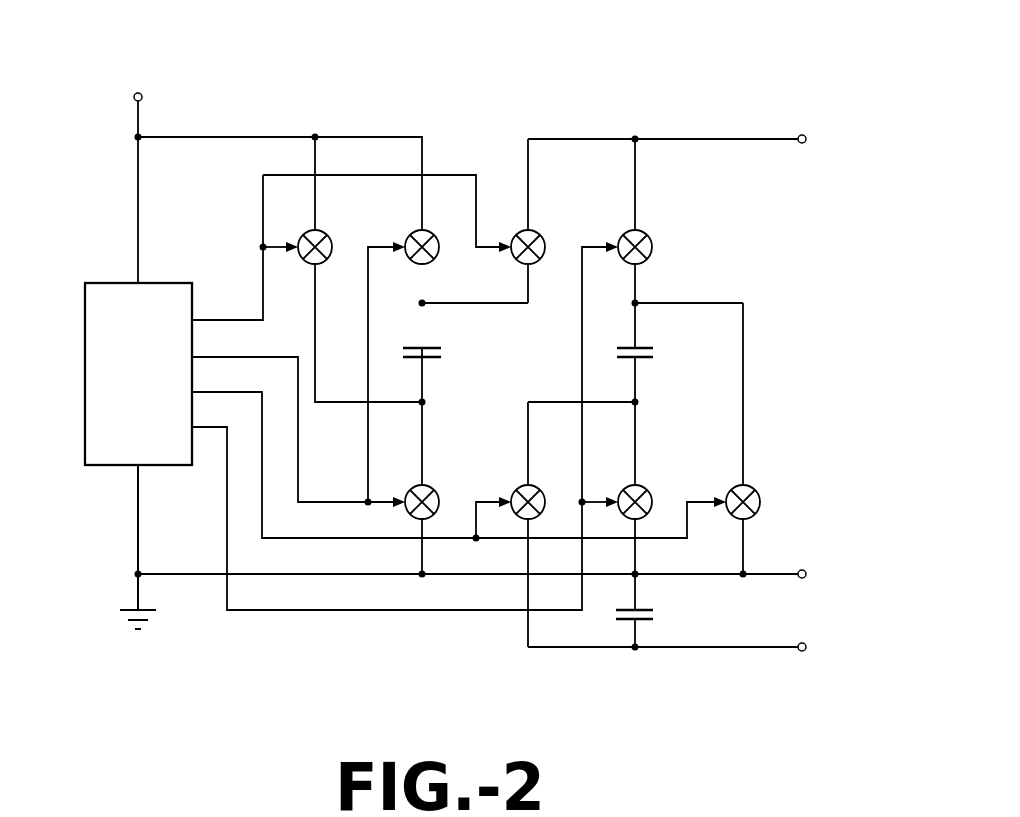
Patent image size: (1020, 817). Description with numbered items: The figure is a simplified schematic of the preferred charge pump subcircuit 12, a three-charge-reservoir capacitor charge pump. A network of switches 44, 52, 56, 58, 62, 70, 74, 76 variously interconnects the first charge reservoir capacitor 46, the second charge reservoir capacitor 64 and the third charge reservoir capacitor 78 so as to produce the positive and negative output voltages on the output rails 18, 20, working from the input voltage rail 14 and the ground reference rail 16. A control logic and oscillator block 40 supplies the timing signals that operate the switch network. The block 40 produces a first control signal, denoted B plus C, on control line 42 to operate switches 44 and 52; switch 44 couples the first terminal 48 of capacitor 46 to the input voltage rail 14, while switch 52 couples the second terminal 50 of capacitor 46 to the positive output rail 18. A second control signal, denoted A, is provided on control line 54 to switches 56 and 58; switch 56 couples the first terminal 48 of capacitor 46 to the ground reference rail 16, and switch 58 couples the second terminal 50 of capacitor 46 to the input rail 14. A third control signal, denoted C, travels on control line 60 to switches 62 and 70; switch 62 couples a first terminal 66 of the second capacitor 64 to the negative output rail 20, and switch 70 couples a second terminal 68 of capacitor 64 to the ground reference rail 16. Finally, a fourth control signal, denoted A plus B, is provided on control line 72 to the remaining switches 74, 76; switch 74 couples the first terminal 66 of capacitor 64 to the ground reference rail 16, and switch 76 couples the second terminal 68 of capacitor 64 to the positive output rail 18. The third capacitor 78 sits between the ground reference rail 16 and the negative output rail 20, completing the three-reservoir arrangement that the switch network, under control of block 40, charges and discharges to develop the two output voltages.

The charge pump subcircuit 12 is at (408, 76).
The input voltage rail 14 is at (138, 208).
The ground reference rail 16 is at (720, 577).
The +Vo output rail 18 is at (717, 139).
The -Vo output rail 20 is at (720, 650).
The control logic and oscillator block 40 is at (85, 356).
The control line 42 is at (252, 320).
The switch 44 is at (326, 263).
The charge reservoir capacitor C1 46 is at (425, 346).
The first terminal of capacitor C1 48 is at (425, 403).
The second terminal of capacitor C1 50 is at (424, 302).
The switch 52 is at (535, 232).
The control line 54 is at (257, 357).
The switch 56 is at (435, 489).
The switch 58 is at (410, 232).
The control line 60 is at (254, 392).
The switch 62 is at (532, 485).
The charge reservoir capacitor C2 64 is at (640, 346).
The first terminal of capacitor C2 66 is at (640, 404).
The second terminal of capacitor C2 68 is at (632, 306).
The switch 70 is at (752, 489).
The control line 72 is at (212, 427).
The switch 74 is at (645, 488).
The switch 76 is at (644, 232).
The charge reservoir capacitor C3 78 is at (632, 619).